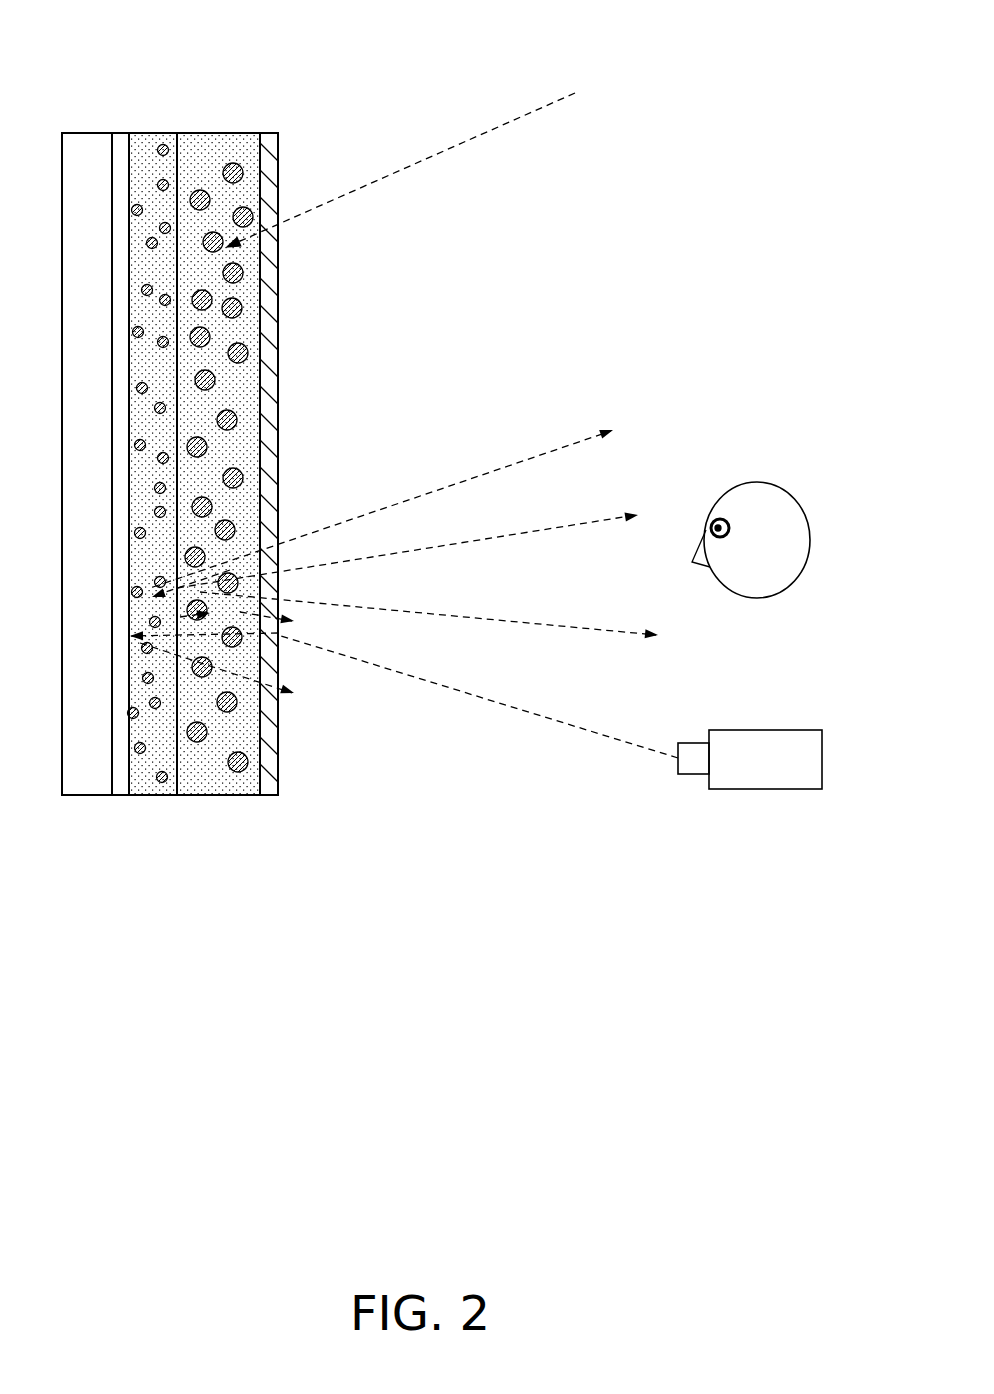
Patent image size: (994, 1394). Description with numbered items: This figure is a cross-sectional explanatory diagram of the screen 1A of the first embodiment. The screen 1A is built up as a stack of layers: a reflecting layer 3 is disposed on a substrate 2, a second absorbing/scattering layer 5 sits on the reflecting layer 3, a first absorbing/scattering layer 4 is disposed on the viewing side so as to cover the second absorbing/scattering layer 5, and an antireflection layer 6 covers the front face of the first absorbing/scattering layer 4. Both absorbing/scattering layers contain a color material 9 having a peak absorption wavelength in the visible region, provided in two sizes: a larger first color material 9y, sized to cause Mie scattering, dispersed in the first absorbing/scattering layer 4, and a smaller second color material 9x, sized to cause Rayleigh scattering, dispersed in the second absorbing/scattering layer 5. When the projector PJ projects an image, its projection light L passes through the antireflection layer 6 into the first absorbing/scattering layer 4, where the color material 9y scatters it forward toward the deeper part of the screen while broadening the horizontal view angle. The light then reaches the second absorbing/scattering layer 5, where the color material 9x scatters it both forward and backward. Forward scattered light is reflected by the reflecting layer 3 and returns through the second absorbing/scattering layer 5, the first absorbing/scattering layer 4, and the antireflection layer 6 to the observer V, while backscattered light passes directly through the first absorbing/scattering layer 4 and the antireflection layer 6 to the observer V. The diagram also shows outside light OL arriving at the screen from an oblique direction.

The screen 1A is at (330, 55).
The substrate 2 is at (82, 797).
The reflecting layer 3 is at (115, 797).
The first absorbing/scattering layer 4 is at (214, 797).
The second absorbing/scattering layer 5 is at (146, 797).
The antireflection layer 6 is at (264, 797).
The color material 9 is at (206, 427).
The second color material 9x is at (162, 180).
The first color material 9y is at (229, 164).
The outside light OL is at (396, 170).
The projection light L is at (441, 688).
The observer V is at (757, 481).
The projector PJ is at (765, 790).